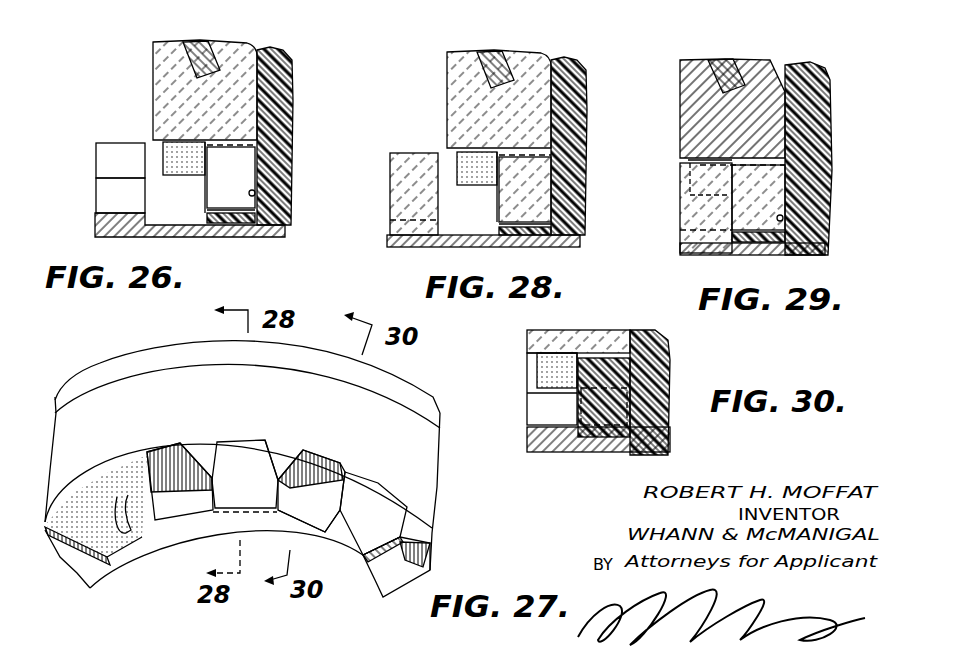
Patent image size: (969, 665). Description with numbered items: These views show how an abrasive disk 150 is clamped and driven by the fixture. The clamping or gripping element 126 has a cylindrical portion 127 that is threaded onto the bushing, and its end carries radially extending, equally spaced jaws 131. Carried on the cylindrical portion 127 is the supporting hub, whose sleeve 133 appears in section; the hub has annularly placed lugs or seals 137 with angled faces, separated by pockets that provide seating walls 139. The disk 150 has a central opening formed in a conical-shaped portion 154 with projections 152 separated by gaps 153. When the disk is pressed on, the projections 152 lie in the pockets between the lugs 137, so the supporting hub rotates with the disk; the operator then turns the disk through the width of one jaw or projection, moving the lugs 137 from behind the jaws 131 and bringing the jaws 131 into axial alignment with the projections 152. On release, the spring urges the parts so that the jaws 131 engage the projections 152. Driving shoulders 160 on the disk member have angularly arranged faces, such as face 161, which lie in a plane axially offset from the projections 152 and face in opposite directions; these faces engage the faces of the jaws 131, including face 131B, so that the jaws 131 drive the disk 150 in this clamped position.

In FIG. 27, the clamping or gripping element 126 is at (193, 548).
In FIG. 26, the cylindrical portion 127 is at (245, 237).
In FIG. 28, the cylindrical portion 127 is at (540, 247).
In FIG. 29, the cylindrical portion 127 is at (826, 250).
In FIG. 26, the jaws 131 is at (108, 192).
In FIG. 28, the jaws 131 is at (405, 190).
In FIG. 29, the jaws 131 is at (695, 210).
In FIG. 30, the jaws 131 is at (537, 407).
In FIG. 27, the jaws 131 is at (257, 460).
In FIG. 26, the face of jaw 131B is at (104, 157).
In FIG. 26, the sleeve 133 is at (286, 99).
In FIG. 29, the sleeve 133 is at (820, 115).
In FIG. 30, the sleeve 133 is at (665, 353).
In FIG. 26, the lugs or seals 137 is at (203, 198).
In FIG. 30, the lugs or seals 137 is at (613, 407).
In FIG. 27, the lugs or seals 137 is at (323, 493).
In FIG. 26, the seating walls 139 is at (256, 193).
In FIG. 29, the seating walls 139 is at (784, 219).
In FIG. 26, the abrasive disk 150 is at (228, 18).
In FIG. 28, the abrasive disk 150 is at (515, 46).
In FIG. 27, the abrasive disk 150 is at (105, 358).
In FIG. 26, the projections 152 is at (259, 163).
In FIG. 28, the projections 152 is at (540, 185).
In FIG. 29, the projections 152 is at (772, 200).
In FIG. 30, the projections 152 is at (571, 415).
In FIG. 27, the projections 152 is at (97, 493).
In FIG. 27, the gaps 153 is at (343, 473).
In FIG. 26, the conical-shaped portion 154 is at (162, 52).
In FIG. 28, the conical-shaped portion 154 is at (455, 62).
In FIG. 29, the conical-shaped portion 154 is at (690, 72).
In FIG. 30, the conical-shaped portion 154 is at (577, 333).
In FIG. 27, the conical-shaped portion 154 is at (390, 396).
In FIG. 26, the driving shoulders 160 is at (163, 148).
In FIG. 28, the driving shoulders 160 is at (457, 160).
In FIG. 29, the driving shoulders 160 is at (690, 182).
In FIG. 30, the driving shoulders 160 is at (537, 365).
In FIG. 27, the driving shoulders 160 is at (283, 457).
In FIG. 26, the face of driving shoulder 161 is at (190, 163).
In FIG. 28, the face of driving shoulder 161 is at (487, 172).